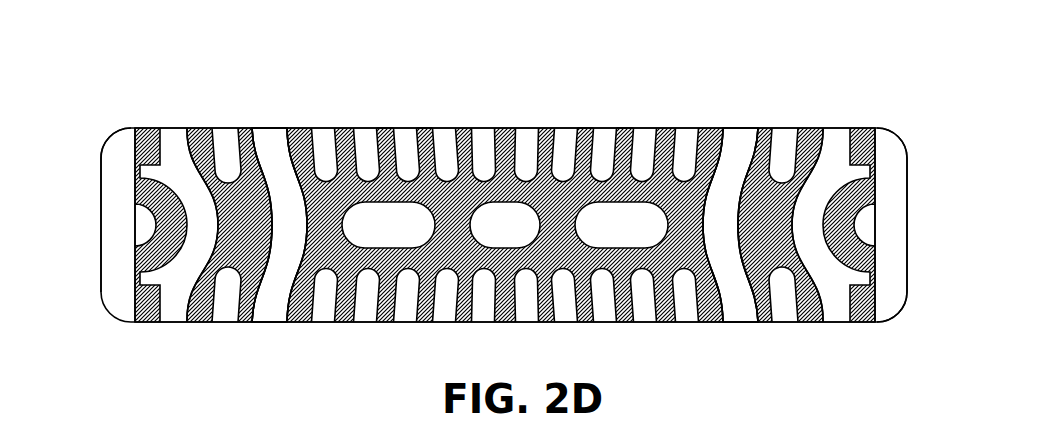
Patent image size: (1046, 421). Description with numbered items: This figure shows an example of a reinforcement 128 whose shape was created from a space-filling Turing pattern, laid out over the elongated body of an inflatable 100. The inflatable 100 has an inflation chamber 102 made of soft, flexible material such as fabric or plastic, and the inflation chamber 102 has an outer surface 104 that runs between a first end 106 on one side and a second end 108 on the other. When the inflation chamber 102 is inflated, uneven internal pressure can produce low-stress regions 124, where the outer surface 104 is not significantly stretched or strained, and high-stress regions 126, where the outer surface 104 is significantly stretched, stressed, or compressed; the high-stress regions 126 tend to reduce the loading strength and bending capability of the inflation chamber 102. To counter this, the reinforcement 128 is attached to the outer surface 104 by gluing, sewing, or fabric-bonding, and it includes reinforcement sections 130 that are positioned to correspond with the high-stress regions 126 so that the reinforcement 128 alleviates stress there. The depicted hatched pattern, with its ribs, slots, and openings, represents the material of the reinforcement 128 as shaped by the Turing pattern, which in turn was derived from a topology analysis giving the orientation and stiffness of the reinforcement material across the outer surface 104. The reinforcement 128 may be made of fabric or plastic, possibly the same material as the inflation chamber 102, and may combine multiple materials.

The inflatable 100 is at (121, 130).
The inflation chamber 102 is at (103, 153).
The outer surface 104 is at (102, 188).
The first end 106 is at (102, 245).
The second end 108 is at (907, 183).
The low-stress regions 124 is at (271, 305).
The high-stress regions 126 is at (243, 128).
The reinforcement 128 is at (725, 157).
The reinforcement sections 130 is at (388, 128).